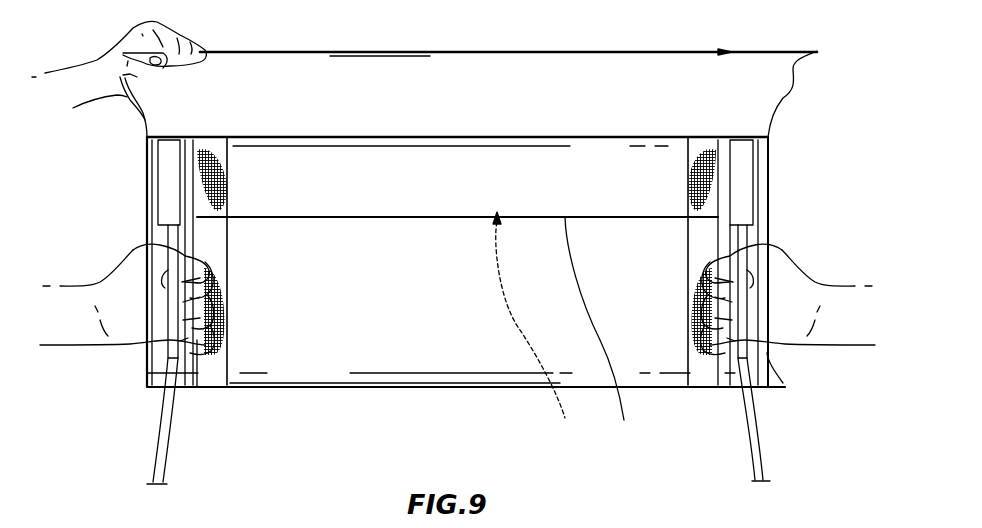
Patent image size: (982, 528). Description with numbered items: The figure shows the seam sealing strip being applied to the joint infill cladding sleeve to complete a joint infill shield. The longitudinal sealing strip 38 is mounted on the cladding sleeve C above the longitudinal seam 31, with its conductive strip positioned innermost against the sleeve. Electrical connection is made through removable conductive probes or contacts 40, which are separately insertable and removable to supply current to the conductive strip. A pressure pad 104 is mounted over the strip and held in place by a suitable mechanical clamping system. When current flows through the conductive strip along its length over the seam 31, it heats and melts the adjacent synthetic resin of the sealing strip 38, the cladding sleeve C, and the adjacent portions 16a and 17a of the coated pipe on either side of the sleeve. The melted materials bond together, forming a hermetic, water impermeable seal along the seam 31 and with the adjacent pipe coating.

The pressure pad 104 is at (620, 52).
The portion of coated portion 16a is at (165, 185).
The portion of coated portion 17a is at (753, 183).
The removable conductive probes or contacts 40 is at (170, 241).
The longitudinal seam 31 is at (534, 331).
The seam sealing strip 38 is at (600, 334).
The cladding sleeve C is at (445, 400).